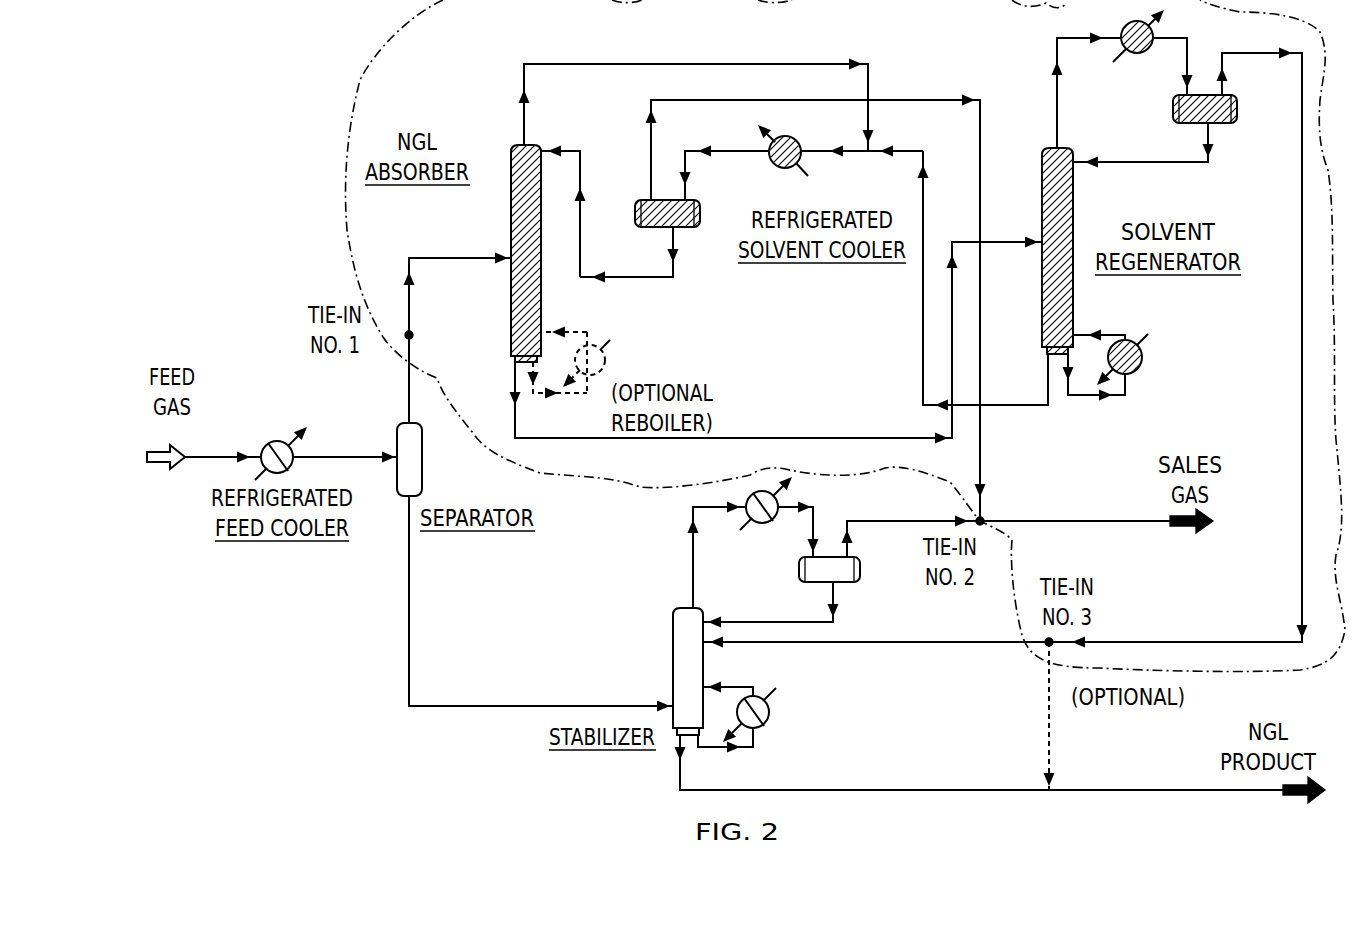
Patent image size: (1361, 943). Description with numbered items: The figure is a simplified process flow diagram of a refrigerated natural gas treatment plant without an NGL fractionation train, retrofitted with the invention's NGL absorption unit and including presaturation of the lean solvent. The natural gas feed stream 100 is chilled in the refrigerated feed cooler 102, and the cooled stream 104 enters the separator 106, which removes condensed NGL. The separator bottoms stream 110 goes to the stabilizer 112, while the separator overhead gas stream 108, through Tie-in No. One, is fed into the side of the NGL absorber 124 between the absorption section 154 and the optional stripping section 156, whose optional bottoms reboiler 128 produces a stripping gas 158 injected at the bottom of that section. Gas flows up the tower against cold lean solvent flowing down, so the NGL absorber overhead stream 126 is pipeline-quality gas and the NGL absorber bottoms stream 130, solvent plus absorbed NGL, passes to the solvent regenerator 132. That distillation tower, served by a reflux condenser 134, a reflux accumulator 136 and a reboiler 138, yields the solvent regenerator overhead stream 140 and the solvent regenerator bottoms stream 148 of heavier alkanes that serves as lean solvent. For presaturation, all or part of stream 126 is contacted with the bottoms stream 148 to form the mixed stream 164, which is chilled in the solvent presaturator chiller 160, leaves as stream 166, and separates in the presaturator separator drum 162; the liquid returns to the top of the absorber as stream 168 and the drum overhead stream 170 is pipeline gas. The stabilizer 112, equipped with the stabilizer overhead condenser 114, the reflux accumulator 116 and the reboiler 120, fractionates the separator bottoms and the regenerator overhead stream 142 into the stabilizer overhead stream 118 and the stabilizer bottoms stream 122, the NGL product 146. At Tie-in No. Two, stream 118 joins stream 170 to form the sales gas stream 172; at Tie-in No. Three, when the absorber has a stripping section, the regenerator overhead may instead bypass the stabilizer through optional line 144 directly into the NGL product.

The natural gas feed stream 100 is at (225, 456).
The refrigerated feed cooler 102 is at (268, 442).
The cooled stream 104 is at (365, 454).
The separator 106 is at (425, 458).
The separator overhead gas stream 108 is at (440, 257).
The separator bottoms stream 110 is at (512, 705).
The stabilizer 112 is at (672, 648).
The stabilizer overhead condenser 114 is at (760, 524).
The accumulator 116 is at (858, 581).
The stabilizer overhead stream 118 is at (930, 520).
The reboiler 120 is at (770, 723).
The stabilizer bottoms stream 122 is at (922, 788).
The NGL absorber 124 is at (542, 282).
The NGL absorber overhead stream 126 is at (630, 64).
The bottoms reboiler 128 is at (607, 350).
The NGL absorber bottoms stream 130 is at (763, 435).
The solvent regenerator 132 is at (1043, 295).
The reflux condenser 134 is at (1132, 56).
The reflux accumulator 136 is at (1223, 123).
The reboiler 138 is at (1133, 371).
The solvent regenerator overhead stream 140 is at (1302, 378).
The solvent regenerator overhead stream 142 is at (813, 645).
The line 144 is at (1047, 703).
The NGL product 146 is at (1172, 788).
The solvent regenerator bottoms stream 148 is at (923, 150).
The absorption section 154 is at (525, 192).
The stripping section 156 is at (523, 307).
The stripping gas 158 is at (590, 327).
The solvent presaturator chiller 160 is at (777, 165).
The presaturator separator drum 162 is at (685, 228).
The mixed stream 164 is at (855, 150).
The chilled mixed stream 166 is at (742, 150).
The presaturated lean solvent stream 168 is at (582, 226).
The presaturator separator drum overhead stream 170 is at (935, 98).
The sales gas stream 172 is at (1105, 520).